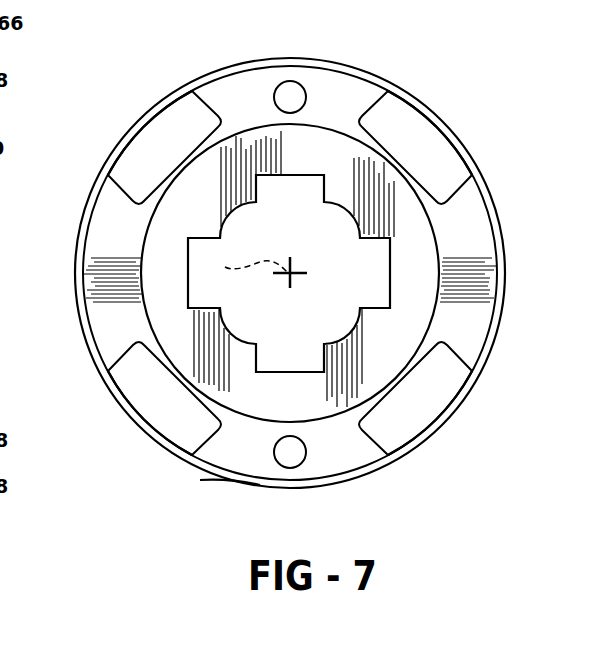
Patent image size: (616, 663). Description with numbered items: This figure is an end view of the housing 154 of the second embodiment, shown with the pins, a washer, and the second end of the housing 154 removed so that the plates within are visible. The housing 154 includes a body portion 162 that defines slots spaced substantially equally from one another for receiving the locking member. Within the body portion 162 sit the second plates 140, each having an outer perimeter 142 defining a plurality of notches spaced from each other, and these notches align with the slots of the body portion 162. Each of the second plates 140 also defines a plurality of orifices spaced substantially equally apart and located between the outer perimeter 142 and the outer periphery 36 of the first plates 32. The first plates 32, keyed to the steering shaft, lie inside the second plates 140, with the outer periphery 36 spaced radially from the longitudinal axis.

The first plates 32 is at (332, 203).
The outer periphery 36 is at (437, 235).
The second plates 140 is at (353, 92).
The outer perimeter 142 is at (483, 338).
The housing 154 is at (490, 357).
The body portion 162 is at (230, 483).